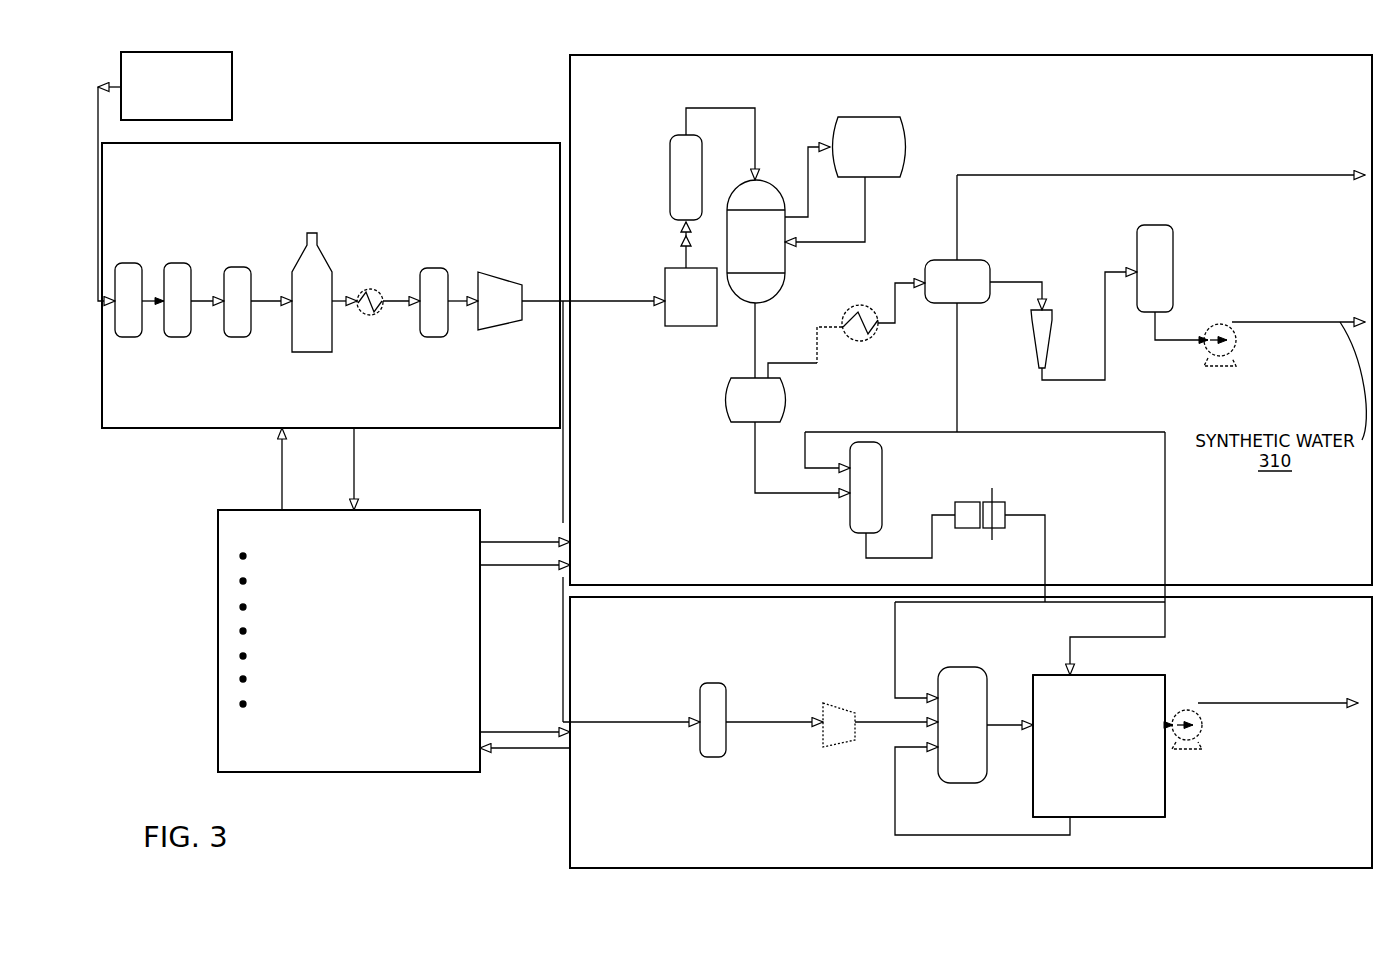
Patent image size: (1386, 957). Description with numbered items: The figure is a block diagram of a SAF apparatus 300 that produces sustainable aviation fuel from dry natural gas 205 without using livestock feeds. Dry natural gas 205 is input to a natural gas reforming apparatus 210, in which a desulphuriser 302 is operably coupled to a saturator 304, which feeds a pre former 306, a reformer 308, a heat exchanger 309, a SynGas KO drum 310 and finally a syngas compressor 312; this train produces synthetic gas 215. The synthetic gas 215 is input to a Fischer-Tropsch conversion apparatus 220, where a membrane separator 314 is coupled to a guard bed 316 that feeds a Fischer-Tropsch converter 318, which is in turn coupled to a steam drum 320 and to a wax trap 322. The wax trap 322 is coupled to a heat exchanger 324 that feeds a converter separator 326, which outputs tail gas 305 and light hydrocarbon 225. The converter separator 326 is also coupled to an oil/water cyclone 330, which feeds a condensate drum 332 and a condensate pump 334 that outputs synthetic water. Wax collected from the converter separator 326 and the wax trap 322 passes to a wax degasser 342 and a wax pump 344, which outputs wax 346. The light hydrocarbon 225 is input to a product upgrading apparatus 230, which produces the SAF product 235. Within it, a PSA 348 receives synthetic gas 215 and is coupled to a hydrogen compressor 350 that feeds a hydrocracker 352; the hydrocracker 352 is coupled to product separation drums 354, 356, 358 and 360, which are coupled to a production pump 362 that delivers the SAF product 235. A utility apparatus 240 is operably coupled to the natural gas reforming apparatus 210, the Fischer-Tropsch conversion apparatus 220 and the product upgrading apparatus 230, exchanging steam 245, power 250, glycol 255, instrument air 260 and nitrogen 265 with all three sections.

The dry natural gas 205 is at (215, 113).
The natural gas reforming apparatus 210 is at (496, 164).
The desulphuriser 302 is at (115, 316).
The saturator 304 is at (191, 290).
The pre former 306 is at (224, 305).
The reformer 308 is at (292, 280).
The heat exchanger 309 is at (380, 293).
The SynGas KO drum 310 is at (420, 305).
The syngas compressor 312 is at (522, 290).
The synthetic gas 215 is at (623, 301).
The utility apparatus 240 is at (405, 542).
The steam 245 is at (362, 566).
The power 250 is at (365, 591).
The glycol 255 is at (363, 617).
The instrument air 260 is at (457, 641).
The nitrogen 265 is at (395, 666).
The Fischer-Tropsch conversion apparatus 220 is at (1018, 77).
The SAF apparatus 300 is at (1358, 91).
The guard bed 316 is at (670, 200).
The membrane separator 314 is at (612, 392).
The Fischer-Tropsch converter 318 is at (737, 303).
The steam drum 320 is at (908, 118).
The heat exchanger 324 is at (868, 305).
The wax trap 322 is at (740, 422).
The light hydrocarbon 225 is at (805, 395).
The converter separator 326 is at (973, 303).
The oil/water cyclone 330 is at (1060, 328).
The tailgas 305 is at (1215, 175).
The condensate drum 332 is at (1172, 225).
The condensate pump 334 is at (1205, 352).
The wax degasser 342 is at (882, 500).
The wax pump 344 is at (990, 500).
The wax 346 is at (1045, 530).
The product upgrading apparatus 230 is at (830, 632).
The PSA 348 is at (698, 742).
The H2 compressor 350 is at (765, 727).
The hydrocracker 352 is at (912, 622).
The product separation drum 354 is at (1083, 759).
The product separation drum 356 is at (1083, 780).
The product separation drum 358 is at (1083, 801).
The product separation drum 360 is at (1083, 819).
The production pump 362 is at (1205, 732).
The SAF product 235 is at (1333, 703).